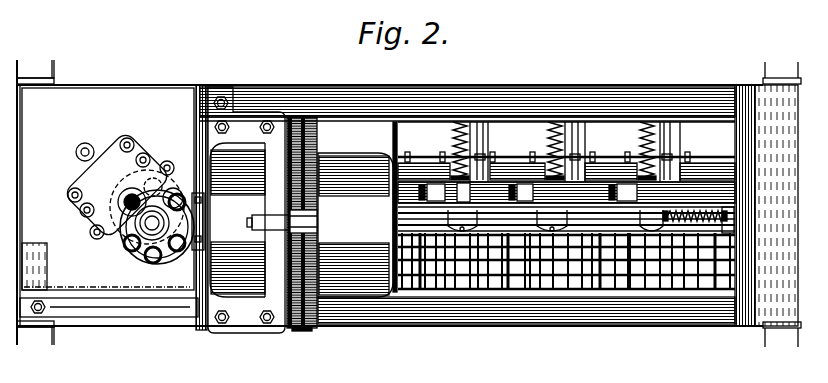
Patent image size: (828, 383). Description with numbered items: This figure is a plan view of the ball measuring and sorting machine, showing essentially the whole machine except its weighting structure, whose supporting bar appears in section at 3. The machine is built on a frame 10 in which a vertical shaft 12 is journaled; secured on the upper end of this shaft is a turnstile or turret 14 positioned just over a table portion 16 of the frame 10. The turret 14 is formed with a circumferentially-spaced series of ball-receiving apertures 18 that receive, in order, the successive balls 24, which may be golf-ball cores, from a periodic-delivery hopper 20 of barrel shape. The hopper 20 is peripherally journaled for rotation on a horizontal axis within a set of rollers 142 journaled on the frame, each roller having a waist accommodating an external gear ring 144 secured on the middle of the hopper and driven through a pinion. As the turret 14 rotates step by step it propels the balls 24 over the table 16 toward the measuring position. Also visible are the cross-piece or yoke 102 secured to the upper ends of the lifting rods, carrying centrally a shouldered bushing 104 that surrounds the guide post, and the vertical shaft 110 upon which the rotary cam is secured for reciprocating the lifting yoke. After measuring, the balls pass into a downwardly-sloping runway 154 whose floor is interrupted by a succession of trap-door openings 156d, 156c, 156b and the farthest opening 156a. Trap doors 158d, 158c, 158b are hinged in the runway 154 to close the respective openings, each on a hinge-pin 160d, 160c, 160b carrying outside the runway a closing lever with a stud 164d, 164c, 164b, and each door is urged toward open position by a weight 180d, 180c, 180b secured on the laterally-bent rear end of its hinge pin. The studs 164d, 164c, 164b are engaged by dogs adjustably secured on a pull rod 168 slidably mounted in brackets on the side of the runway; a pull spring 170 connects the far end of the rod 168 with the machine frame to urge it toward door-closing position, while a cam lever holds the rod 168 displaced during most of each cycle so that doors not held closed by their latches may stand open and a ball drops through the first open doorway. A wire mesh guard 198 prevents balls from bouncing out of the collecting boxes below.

The frame 10 is at (248, 87).
The table portion 16 is at (114, 207).
The vertical shaft 110 is at (82, 147).
The ball-receiving apertures 18 is at (175, 193).
The shouldered bushing 104 is at (117, 193).
The cross-piece or yoke 102 is at (97, 218).
The balls 24 is at (132, 243).
The turnstile or turret 14 is at (132, 262).
The vertical shaft 12 is at (160, 260).
The rollers 142 is at (310, 213).
The periodic-delivery hopper 20 is at (355, 225).
The external gear ring 144 is at (300, 330).
The section line 3 is at (335, 322).
The runway 154 is at (412, 180).
The trap door 158d is at (440, 193).
The trap door 158c is at (536, 187).
The trap door 158b is at (623, 190).
The hinge-pin 160d is at (453, 123).
The hinge-pin 160c is at (548, 150).
The hinge-pin 160b is at (637, 160).
The weight 180d is at (480, 123).
The weight 180c is at (573, 123).
The weight 180b is at (668, 140).
The trap-door opening 156d is at (422, 205).
The trap-door opening 156c is at (515, 205).
The trap-door opening 156b is at (608, 205).
The trap-door opening 156a is at (723, 240).
The stud 164d is at (445, 260).
The stud 164c is at (530, 258).
The stud 164b is at (628, 258).
The pull rod 168 is at (572, 262).
The wire mesh guard 198 is at (665, 222).
The pull spring 170 is at (718, 218).